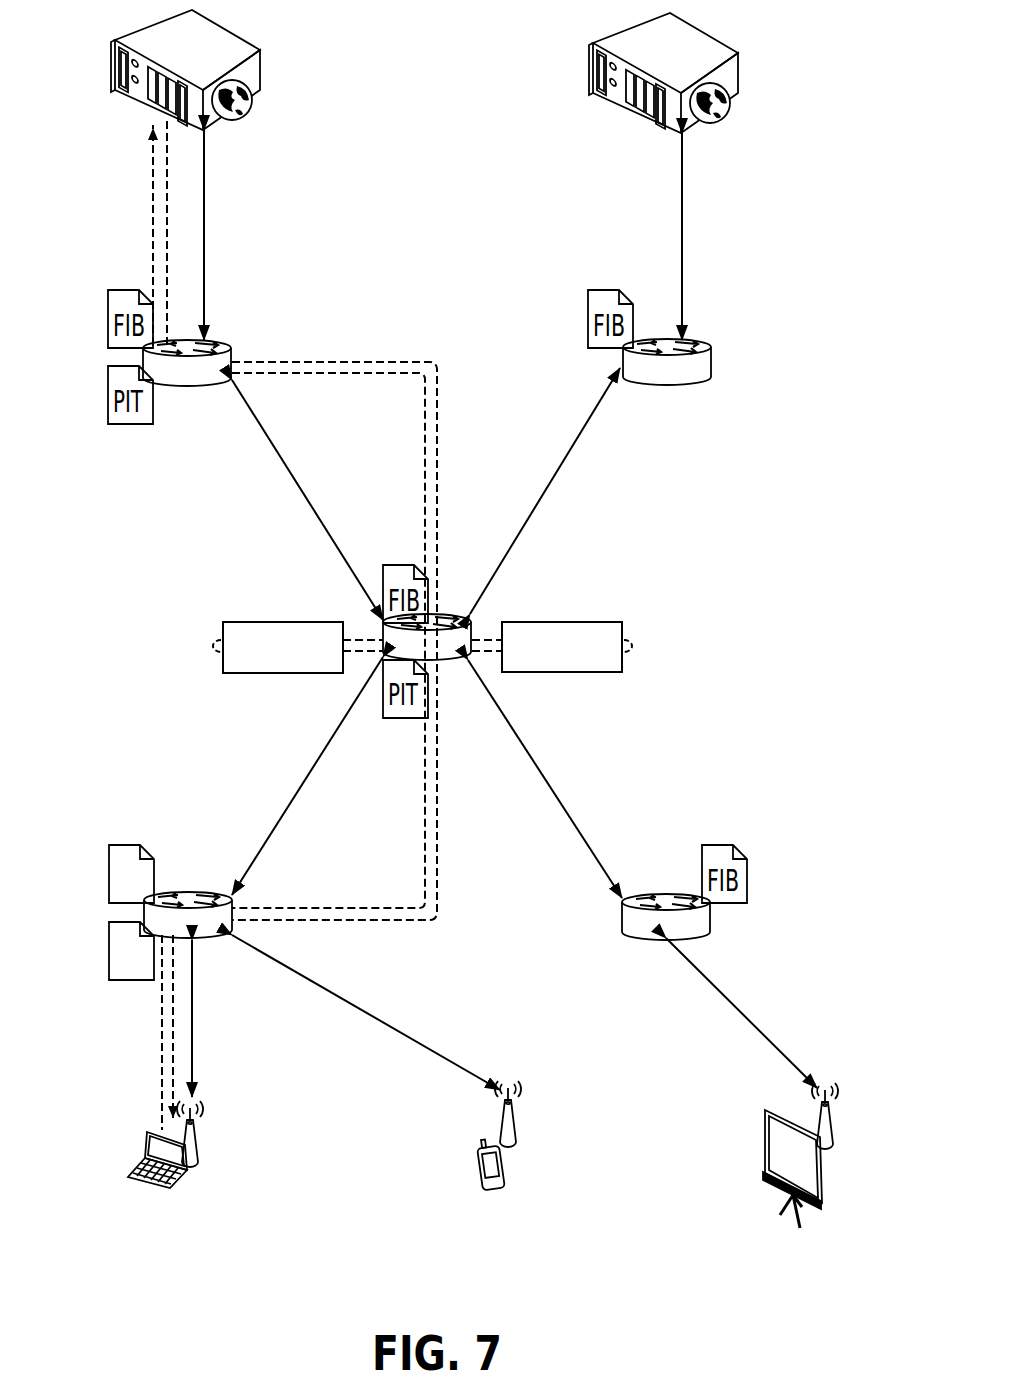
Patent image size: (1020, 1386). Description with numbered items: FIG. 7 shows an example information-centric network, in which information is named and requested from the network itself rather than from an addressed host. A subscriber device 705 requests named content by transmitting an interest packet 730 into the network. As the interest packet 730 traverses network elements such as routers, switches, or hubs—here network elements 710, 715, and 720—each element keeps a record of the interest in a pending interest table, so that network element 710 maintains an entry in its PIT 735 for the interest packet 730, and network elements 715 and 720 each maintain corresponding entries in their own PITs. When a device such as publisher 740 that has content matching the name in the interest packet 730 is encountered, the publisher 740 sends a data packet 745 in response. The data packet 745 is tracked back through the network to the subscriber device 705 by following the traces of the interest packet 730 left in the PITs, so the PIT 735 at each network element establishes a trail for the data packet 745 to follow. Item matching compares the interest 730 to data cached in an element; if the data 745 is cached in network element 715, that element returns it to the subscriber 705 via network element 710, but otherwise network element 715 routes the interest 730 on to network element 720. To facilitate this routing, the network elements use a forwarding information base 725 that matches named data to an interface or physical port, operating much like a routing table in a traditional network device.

The device 705 is at (147, 1132).
The network element 710 is at (203, 937).
The network element 715 is at (457, 660).
The network element 720 is at (230, 347).
The forwarding information base 725 is at (110, 872).
The interest packet 730 is at (282, 620).
The pending interest table 735 is at (110, 948).
The publisher 740 is at (160, 30).
The data packet 745 is at (563, 620).